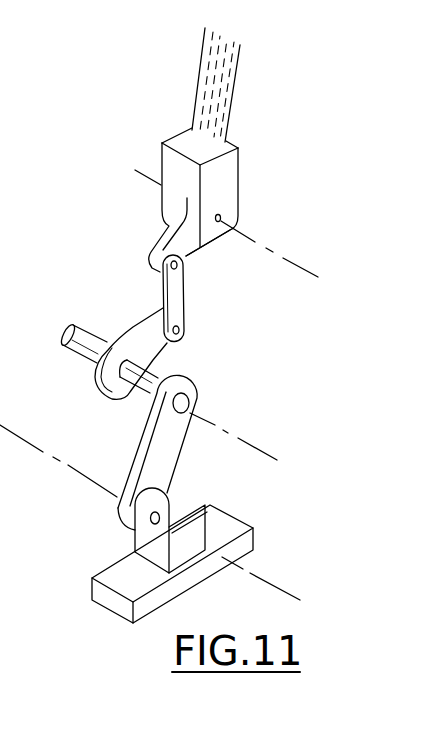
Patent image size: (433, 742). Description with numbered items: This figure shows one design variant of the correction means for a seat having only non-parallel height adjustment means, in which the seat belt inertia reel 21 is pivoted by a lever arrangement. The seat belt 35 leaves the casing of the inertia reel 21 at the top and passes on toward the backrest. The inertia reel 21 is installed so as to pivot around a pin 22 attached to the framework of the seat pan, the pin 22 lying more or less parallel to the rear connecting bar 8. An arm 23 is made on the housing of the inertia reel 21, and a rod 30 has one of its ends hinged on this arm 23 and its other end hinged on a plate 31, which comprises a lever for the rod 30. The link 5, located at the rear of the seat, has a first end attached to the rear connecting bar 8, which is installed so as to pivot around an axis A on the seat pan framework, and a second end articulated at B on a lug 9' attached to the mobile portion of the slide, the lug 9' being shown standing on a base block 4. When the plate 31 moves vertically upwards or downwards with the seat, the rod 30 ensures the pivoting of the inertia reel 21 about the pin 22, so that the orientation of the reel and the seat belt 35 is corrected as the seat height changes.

The seat belt 35 is at (218, 88).
The inertia reel 21 is at (222, 187).
The pin 22 is at (298, 261).
The arm 23 is at (193, 243).
The rod 30 is at (177, 298).
The plate 31 is at (145, 340).
The rear connecting bar 8 is at (67, 346).
The link 5 is at (197, 393).
The axis A is at (247, 442).
The lug 9' is at (179, 518).
The articulation point B is at (280, 590).
The base block 4 is at (108, 603).